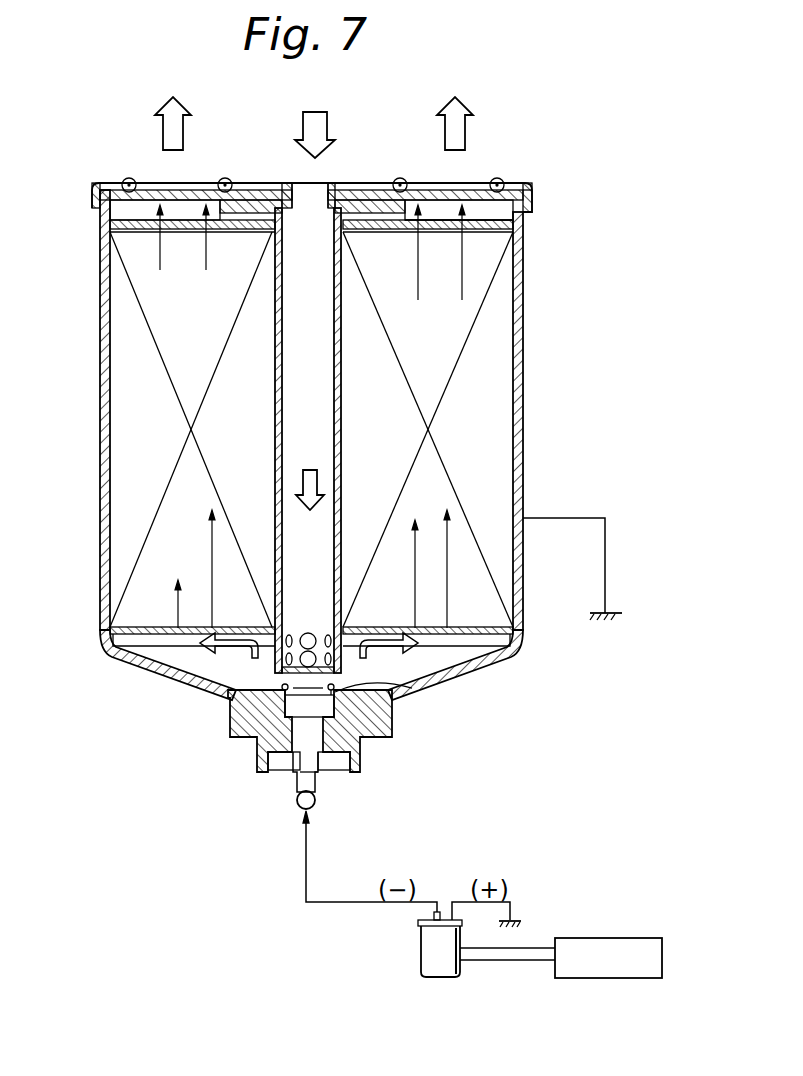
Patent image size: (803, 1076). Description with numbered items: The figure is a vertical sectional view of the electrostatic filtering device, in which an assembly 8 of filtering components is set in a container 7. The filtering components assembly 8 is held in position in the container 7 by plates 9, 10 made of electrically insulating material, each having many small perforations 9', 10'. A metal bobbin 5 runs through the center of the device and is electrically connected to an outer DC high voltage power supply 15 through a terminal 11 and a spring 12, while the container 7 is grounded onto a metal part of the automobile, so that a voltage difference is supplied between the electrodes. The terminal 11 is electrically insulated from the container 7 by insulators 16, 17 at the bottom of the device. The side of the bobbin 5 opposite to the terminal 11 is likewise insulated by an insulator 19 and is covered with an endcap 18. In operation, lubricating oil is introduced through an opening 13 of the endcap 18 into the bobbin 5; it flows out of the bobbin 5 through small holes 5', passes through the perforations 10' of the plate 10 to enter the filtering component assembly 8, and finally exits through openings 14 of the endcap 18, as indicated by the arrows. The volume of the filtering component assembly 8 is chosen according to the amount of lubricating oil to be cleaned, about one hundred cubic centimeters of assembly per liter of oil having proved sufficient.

The metal bobbin 5 is at (342, 151).
The small holes 5' is at (249, 679).
The container 7 is at (518, 272).
The filtering components assembly 8 is at (498, 370).
The plate 9 is at (350, 203).
The perforations 9' is at (483, 162).
The plate 10 is at (342, 664).
The perforations 10' is at (320, 688).
The terminal 11 is at (314, 804).
The spring 12 is at (400, 690).
The opening 13 is at (312, 200).
The openings 14 is at (455, 193).
The DC high voltage power supply 15 is at (441, 967).
The insulator 16 is at (240, 712).
The insulator 17 is at (257, 758).
The endcap 18 is at (520, 190).
The insulator 19 is at (377, 188).